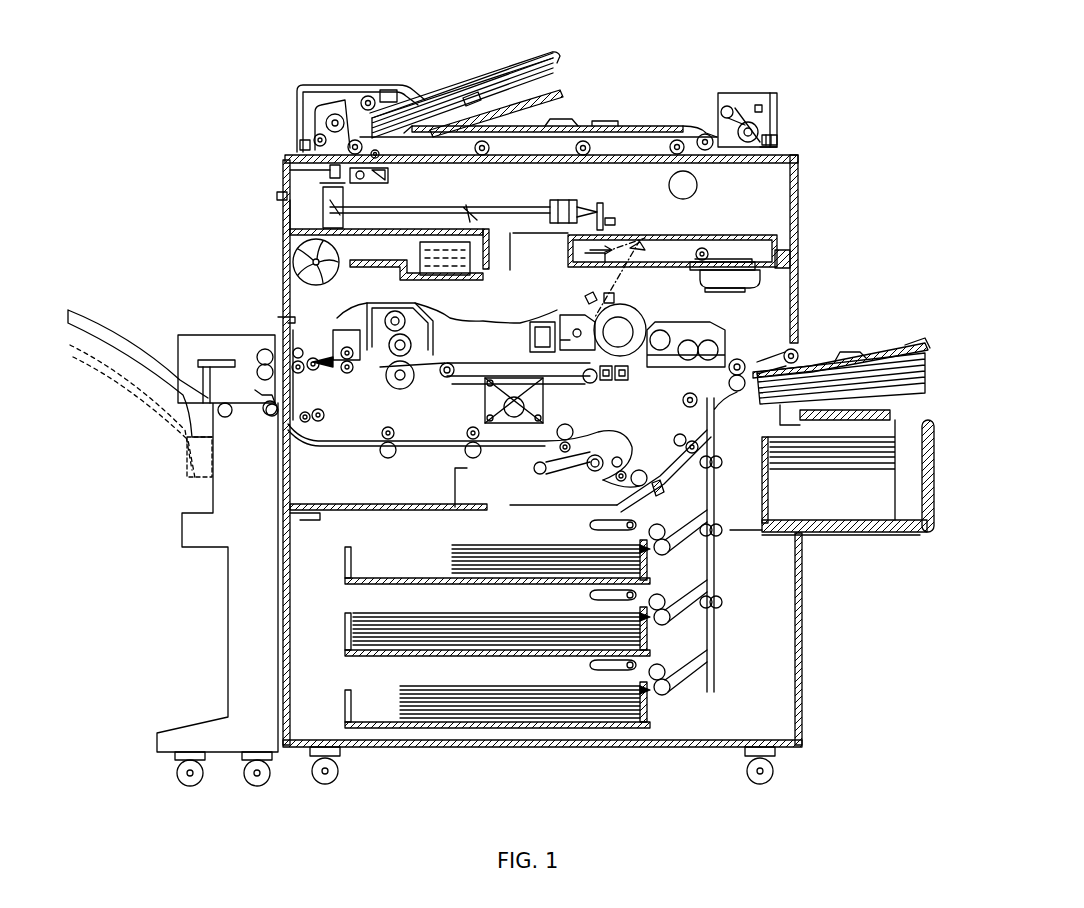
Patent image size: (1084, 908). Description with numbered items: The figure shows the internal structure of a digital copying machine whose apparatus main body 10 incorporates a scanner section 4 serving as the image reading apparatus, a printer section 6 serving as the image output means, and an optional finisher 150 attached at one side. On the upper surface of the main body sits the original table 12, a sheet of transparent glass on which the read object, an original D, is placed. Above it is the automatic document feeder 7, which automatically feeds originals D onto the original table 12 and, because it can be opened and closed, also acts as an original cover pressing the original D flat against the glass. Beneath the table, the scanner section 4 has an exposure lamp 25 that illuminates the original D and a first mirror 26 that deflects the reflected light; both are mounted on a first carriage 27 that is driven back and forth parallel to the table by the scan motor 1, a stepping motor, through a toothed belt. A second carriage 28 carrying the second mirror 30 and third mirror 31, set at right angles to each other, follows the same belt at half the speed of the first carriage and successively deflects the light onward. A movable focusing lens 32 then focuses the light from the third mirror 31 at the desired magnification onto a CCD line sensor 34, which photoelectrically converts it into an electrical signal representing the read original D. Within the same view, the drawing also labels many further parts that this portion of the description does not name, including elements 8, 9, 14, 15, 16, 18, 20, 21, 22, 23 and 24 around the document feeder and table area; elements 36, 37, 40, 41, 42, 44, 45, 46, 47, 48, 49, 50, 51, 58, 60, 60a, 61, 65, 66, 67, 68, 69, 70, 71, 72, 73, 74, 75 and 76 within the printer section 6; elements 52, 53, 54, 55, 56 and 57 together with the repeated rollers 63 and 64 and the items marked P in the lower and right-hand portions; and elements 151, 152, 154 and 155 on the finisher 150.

The scan motor 1 is at (697, 183).
The scanner section 4 is at (515, 195).
The printer section 6 is at (738, 305).
The automatic document feeder 7 is at (422, 78).
The document feed tray 8 is at (470, 94).
The document stopper 9 is at (381, 90).
The apparatus main body 10 is at (802, 625).
The original table 12 is at (652, 137).
The automatic document feeder cover 14 is at (360, 97).
The document feed roller unit 15 is at (315, 125).
The document sensor 16 is at (300, 145).
The document guide 18 is at (556, 124).
The hinge 20 is at (777, 137).
The hinge member 21 is at (778, 146).
The document discharge unit 22 is at (745, 93).
The discharge roller 23 is at (720, 105).
The document tray 24 is at (600, 122).
The exposure lamp 25 is at (388, 182).
The first mirror 26 is at (343, 198).
The first carriage 27 is at (330, 170).
The second carriage 28 is at (277, 197).
The second mirror 30 is at (290, 212).
The third mirror 31 is at (340, 235).
The focusing lens 32 is at (572, 200).
The CCD line sensor 34 is at (603, 210).
The laser scanning unit 36 is at (740, 260).
The polygon mirror 37 is at (745, 284).
The laser unit mount 40 is at (796, 262).
The laser beam mirror 41 is at (698, 248).
The laser unit 42 is at (590, 249).
The photosensitive drum 44 is at (640, 312).
The charger 45 is at (614, 305).
The developing unit 46 is at (725, 335).
The transfer unit 47 is at (543, 385).
The roller 48 is at (573, 432).
The transfer belt 49 is at (545, 362).
The cleaning unit 50 is at (540, 320).
The cleaner 51 is at (580, 312).
The paper feed cassette 52 is at (345, 565).
The paper feed cassette 53 is at (345, 637).
The paper feed cassette 54 is at (347, 710).
The paper discharge tray 55 is at (872, 520).
The paper stack 56 is at (858, 352).
The discharge tray 57 is at (920, 340).
The paper conveying path 58 is at (471, 350).
The fixing unit 60 is at (418, 315).
The fixing unit guide 60a is at (380, 308).
The discharge roller 61 is at (270, 347).
The pickup roller 63 is at (797, 352).
The conveying roller 64 is at (740, 358).
The sensor 65 is at (606, 382).
The sensor 66 is at (623, 382).
The roller 67 is at (449, 378).
The roller 68 is at (347, 374).
The fan 69 is at (322, 282).
The duplex conveying path 70 is at (320, 463).
The guide 71 is at (497, 488).
The conveying roller 72 is at (365, 453).
The roller 73 is at (550, 475).
The switchback path 74 is at (650, 445).
The roller 75 is at (612, 474).
The discharge roller 76 is at (340, 350).
The finisher 150 is at (178, 345).
The stapler tray 151 is at (212, 360).
The paper guide 152 is at (268, 412).
The discharge tray 154 is at (100, 304).
The roller 155 is at (228, 418).
The original D is at (540, 70).
The paper P is at (460, 560).